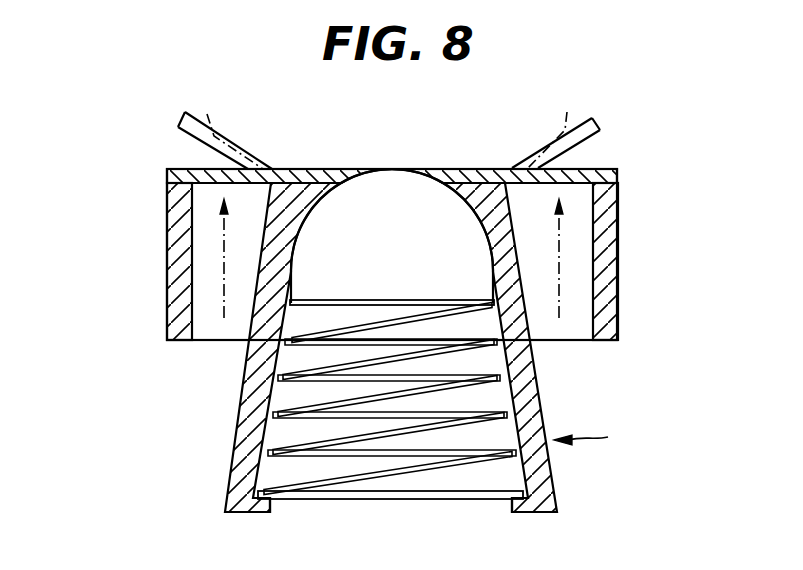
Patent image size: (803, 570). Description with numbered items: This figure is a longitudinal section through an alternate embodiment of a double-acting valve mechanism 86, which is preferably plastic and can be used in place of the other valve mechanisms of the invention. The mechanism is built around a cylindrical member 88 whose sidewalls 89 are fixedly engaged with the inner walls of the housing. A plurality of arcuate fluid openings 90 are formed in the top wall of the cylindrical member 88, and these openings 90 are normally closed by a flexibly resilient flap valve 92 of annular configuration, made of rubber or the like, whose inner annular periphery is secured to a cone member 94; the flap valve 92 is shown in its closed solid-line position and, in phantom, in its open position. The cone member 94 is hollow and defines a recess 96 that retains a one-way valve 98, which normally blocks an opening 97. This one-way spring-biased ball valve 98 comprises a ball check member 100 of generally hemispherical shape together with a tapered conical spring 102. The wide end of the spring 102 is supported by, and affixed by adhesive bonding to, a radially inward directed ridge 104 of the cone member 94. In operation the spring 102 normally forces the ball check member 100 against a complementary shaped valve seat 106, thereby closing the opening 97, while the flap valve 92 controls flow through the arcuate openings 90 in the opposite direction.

The double-acting valve mechanism 86 is at (108, 164).
The cylindrical member 88 is at (612, 252).
The sidewalls 89 is at (613, 319).
The arcuate fluid openings 90 is at (205, 200).
The flap valve 92 is at (207, 114).
The cone member 94 is at (243, 380).
The recess 96 is at (506, 390).
The opening 97 is at (434, 176).
The one-way valve 98 is at (595, 437).
The ball check member 100 is at (356, 197).
The tapered conical spring 102 is at (445, 468).
The radially inward directed ridge 104 is at (262, 513).
The valve seat 106 is at (330, 190).